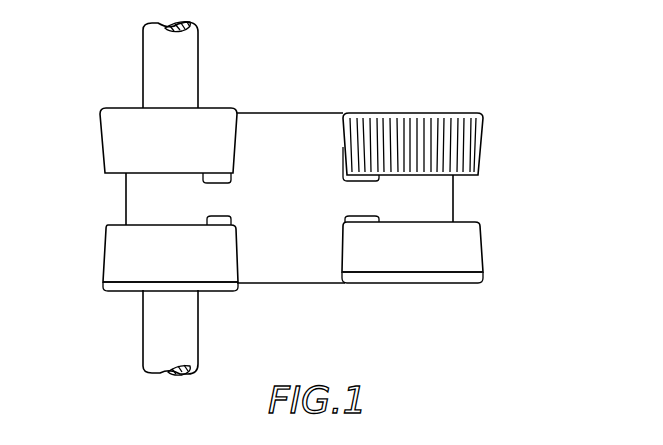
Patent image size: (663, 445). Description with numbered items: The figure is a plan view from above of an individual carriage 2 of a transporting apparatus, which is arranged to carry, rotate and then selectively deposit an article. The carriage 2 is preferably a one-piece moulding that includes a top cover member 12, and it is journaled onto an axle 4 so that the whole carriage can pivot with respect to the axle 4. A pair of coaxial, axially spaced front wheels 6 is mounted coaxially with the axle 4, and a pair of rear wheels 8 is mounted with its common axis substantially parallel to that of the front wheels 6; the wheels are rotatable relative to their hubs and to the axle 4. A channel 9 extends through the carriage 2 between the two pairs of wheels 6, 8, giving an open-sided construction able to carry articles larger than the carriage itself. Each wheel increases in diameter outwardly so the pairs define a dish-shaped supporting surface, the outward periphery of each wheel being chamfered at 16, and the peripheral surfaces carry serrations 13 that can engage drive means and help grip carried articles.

The carriage 2 is at (310, 104).
The axle 4 is at (152, 61).
The wheels 6 is at (116, 258).
The wheels 8 is at (466, 240).
The channel 9 is at (277, 215).
The cover member 12 is at (290, 257).
The serrations 13 is at (445, 124).
The chamfer 16 is at (103, 291).